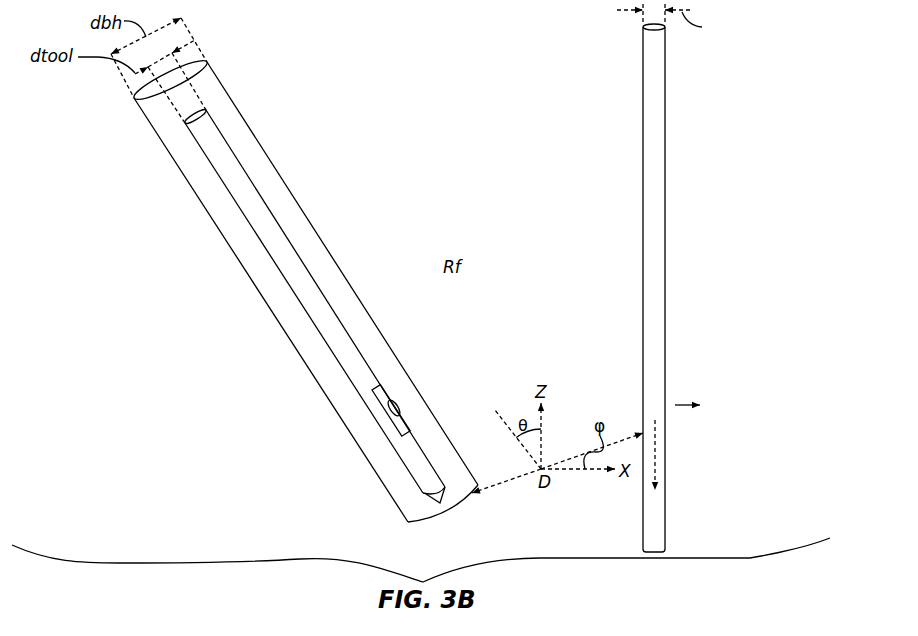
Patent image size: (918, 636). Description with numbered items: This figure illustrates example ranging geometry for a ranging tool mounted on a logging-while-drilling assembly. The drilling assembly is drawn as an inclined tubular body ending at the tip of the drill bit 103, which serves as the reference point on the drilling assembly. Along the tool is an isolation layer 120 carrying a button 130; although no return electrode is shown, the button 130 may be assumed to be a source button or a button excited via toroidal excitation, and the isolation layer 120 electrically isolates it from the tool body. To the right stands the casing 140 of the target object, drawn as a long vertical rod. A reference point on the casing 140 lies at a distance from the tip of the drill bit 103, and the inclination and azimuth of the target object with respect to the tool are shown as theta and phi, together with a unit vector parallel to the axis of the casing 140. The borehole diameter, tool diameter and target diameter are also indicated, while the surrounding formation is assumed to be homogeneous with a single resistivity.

The drill bit 103 is at (440, 498).
The isolation layer 120 is at (386, 390).
The button 130 is at (395, 412).
The casing 140 is at (663, 103).